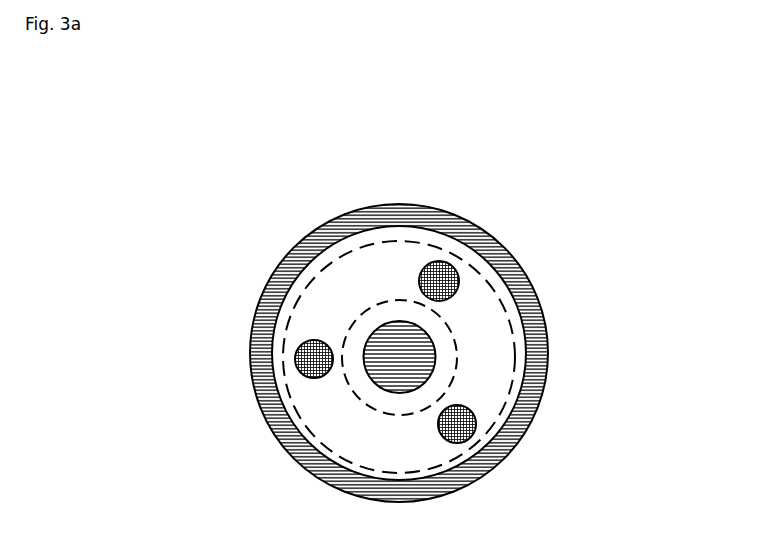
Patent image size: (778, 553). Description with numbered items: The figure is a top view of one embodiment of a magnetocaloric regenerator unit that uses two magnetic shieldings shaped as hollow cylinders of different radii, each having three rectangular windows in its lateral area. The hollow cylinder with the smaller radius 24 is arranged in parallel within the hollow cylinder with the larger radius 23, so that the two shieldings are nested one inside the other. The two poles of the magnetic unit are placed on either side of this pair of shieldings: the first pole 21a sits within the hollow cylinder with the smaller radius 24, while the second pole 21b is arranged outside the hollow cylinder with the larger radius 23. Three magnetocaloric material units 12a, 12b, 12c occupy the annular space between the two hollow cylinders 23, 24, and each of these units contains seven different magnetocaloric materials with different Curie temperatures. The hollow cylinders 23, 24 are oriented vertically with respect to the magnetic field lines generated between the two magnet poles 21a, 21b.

The second pole of the magnetic unit 21b is at (542, 375).
The first pole of the magnetic unit 21a is at (405, 356).
The hollow cylinder with the larger radius 23 is at (312, 282).
The hollow cylinder with the smaller radius 24 is at (348, 328).
The magnetocaloric material unit 12a is at (460, 426).
The magnetocaloric material unit 12b is at (444, 279).
The magnetocaloric material unit 12c is at (310, 360).